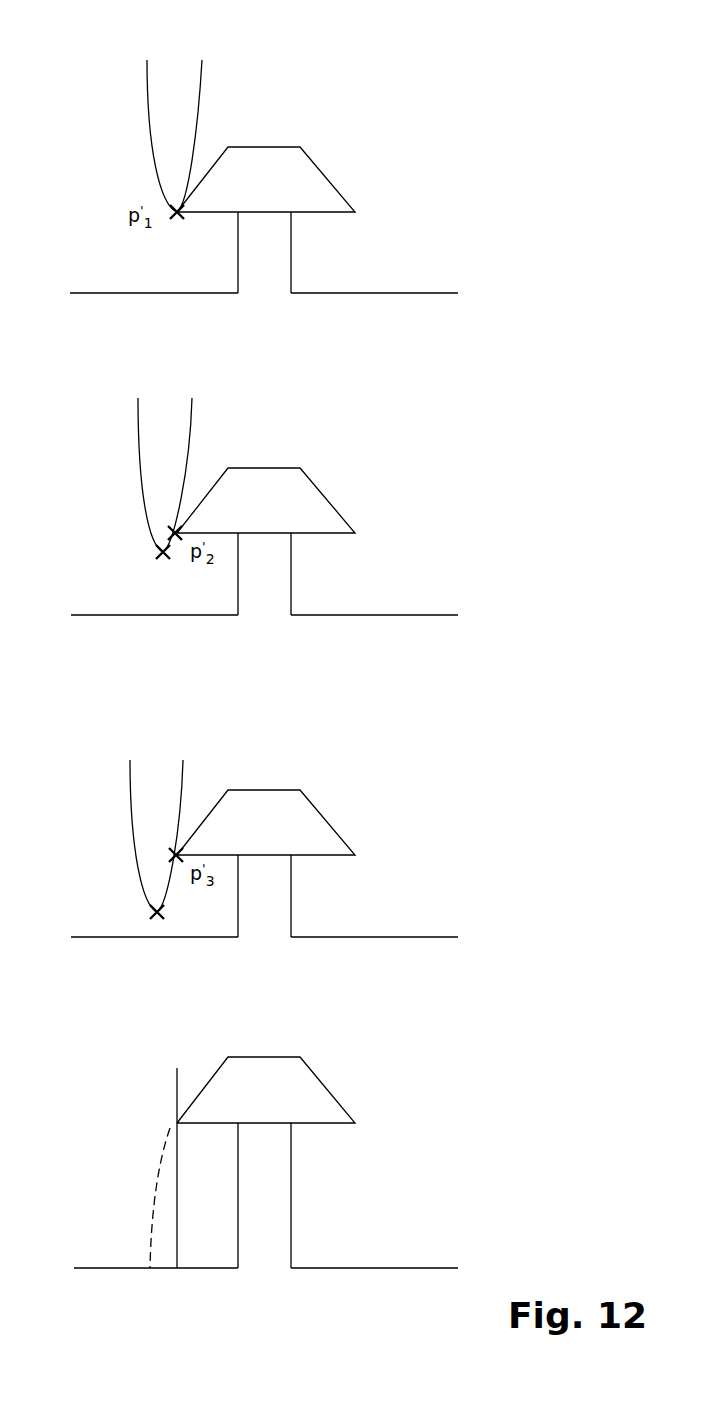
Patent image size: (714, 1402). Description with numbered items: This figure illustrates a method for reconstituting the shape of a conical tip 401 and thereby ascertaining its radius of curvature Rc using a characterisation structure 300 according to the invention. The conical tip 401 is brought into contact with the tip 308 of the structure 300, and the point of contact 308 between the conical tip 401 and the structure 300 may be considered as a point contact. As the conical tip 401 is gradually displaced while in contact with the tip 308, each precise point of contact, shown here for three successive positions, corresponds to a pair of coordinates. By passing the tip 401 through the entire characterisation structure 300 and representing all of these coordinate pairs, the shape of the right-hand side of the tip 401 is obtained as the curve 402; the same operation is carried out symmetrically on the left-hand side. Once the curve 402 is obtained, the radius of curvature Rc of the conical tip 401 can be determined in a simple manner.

The characterisation structure 300 is at (351, 156).
The conical tip 401 is at (148, 114).
The tip of the characterisation structure 308 is at (179, 219).
The curve 402 is at (153, 1193).
The radius of curvature Rc is at (176, 1123).